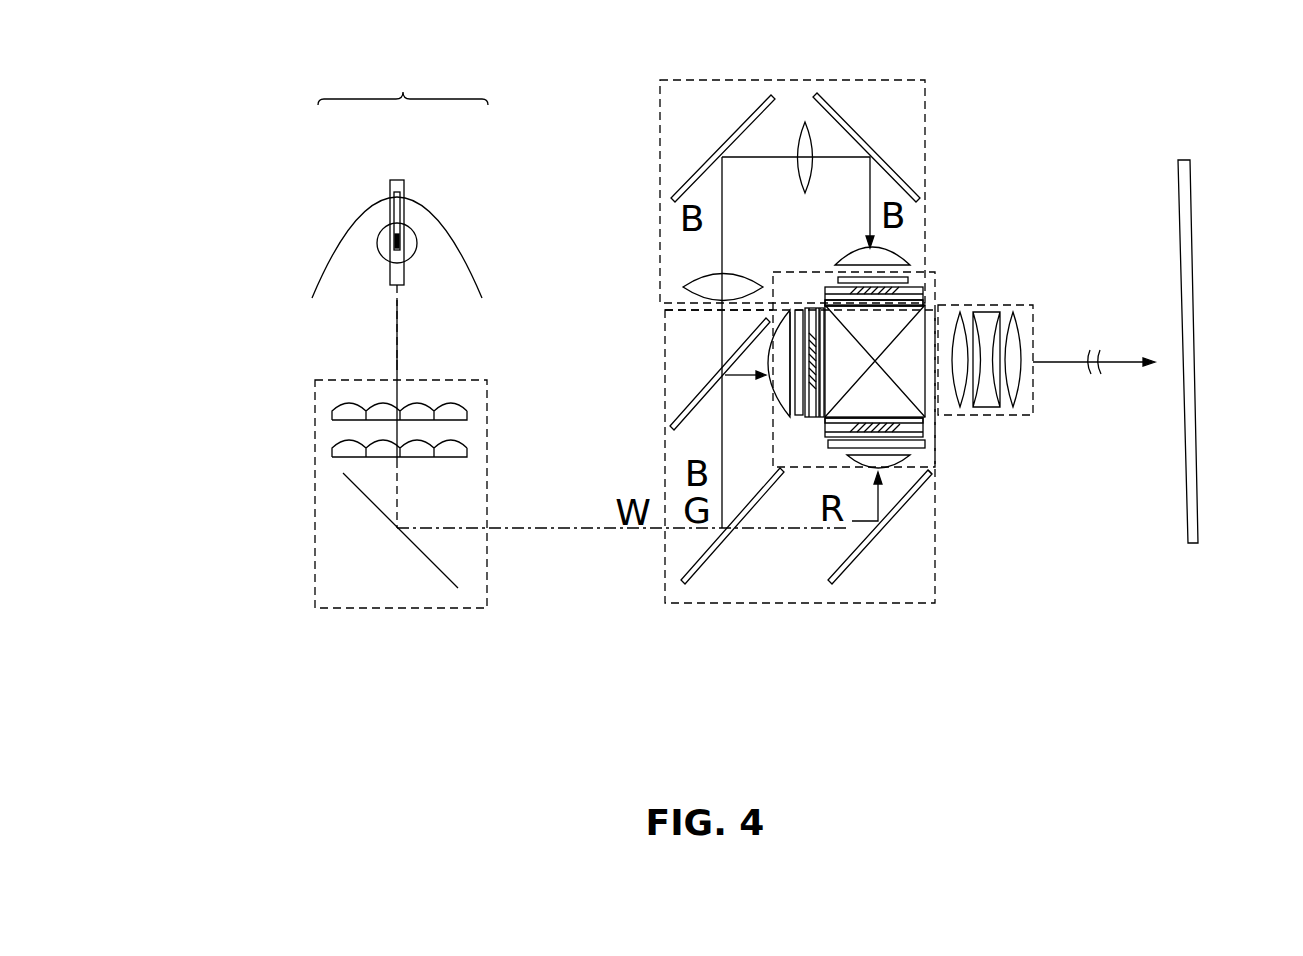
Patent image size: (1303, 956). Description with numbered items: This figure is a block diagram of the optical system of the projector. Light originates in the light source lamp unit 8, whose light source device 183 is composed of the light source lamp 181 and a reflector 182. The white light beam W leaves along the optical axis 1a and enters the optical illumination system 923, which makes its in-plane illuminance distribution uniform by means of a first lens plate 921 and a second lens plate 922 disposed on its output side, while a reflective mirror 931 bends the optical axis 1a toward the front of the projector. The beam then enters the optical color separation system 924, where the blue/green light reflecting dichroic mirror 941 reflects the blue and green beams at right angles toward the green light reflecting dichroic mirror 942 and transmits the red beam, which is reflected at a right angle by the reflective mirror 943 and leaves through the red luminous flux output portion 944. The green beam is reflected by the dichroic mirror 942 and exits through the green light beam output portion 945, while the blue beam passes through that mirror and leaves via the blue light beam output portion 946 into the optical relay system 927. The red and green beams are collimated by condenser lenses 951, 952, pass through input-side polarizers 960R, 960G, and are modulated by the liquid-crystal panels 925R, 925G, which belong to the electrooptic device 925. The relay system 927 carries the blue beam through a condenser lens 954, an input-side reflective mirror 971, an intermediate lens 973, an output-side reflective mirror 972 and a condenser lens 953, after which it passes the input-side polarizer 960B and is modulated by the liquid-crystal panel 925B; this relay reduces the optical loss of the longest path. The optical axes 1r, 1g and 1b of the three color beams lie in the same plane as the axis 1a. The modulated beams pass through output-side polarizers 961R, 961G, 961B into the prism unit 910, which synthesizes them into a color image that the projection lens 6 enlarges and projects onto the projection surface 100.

The light source lamp unit 8 is at (340, 247).
The light source lamp 181 is at (384, 232).
The reflector 182 is at (427, 203).
The light source device 183 is at (403, 80).
The optical axis 1a is at (385, 362).
The optical axis 1b is at (780, 157).
The optical axis 1g is at (745, 375).
The optical axis 1r is at (820, 560).
The first lens plate 921 is at (332, 413).
The second lens plate 922 is at (332, 452).
The optical illumination system 923 is at (315, 585).
The reflective mirror 931 is at (425, 560).
The optical relay system 927 is at (688, 78).
The optical color separation system 924 is at (935, 580).
The electrooptic device 925 is at (822, 440).
The input-side reflective mirror 971 is at (700, 165).
The output-side reflective mirror 972 is at (847, 127).
The intermediate lens 973 is at (806, 122).
The condenser lens 954 is at (700, 272).
The condenser lens 952 is at (772, 320).
The condenser lens 953 is at (895, 257).
The condenser lens 951 is at (905, 460).
The blue light beam output portion 946 is at (705, 305).
The green light beam output portion 945 is at (784, 408).
The green light reflecting dichroic mirror 942 is at (700, 387).
The blue/green light reflecting dichroic mirror 941 is at (697, 578).
The reflective mirror 943 is at (840, 578).
The red luminous flux output portion 944 is at (900, 467).
The input-side polarizer 960G is at (795, 330).
The input-side polarizer 960B is at (910, 277).
The input-side polarizer 960R is at (915, 446).
The liquid-crystal panel 925G is at (812, 308).
The liquid-crystal panel 925B is at (921, 289).
The liquid-crystal panel 925R is at (925, 432).
The output-side polarizer 961G is at (822, 420).
The output-side polarizer 961B is at (923, 305).
The output-side polarizer 961R is at (925, 420).
The prism unit 910 is at (924, 302).
The projection lens 6 is at (1033, 310).
The projection surface 100 is at (1192, 230).